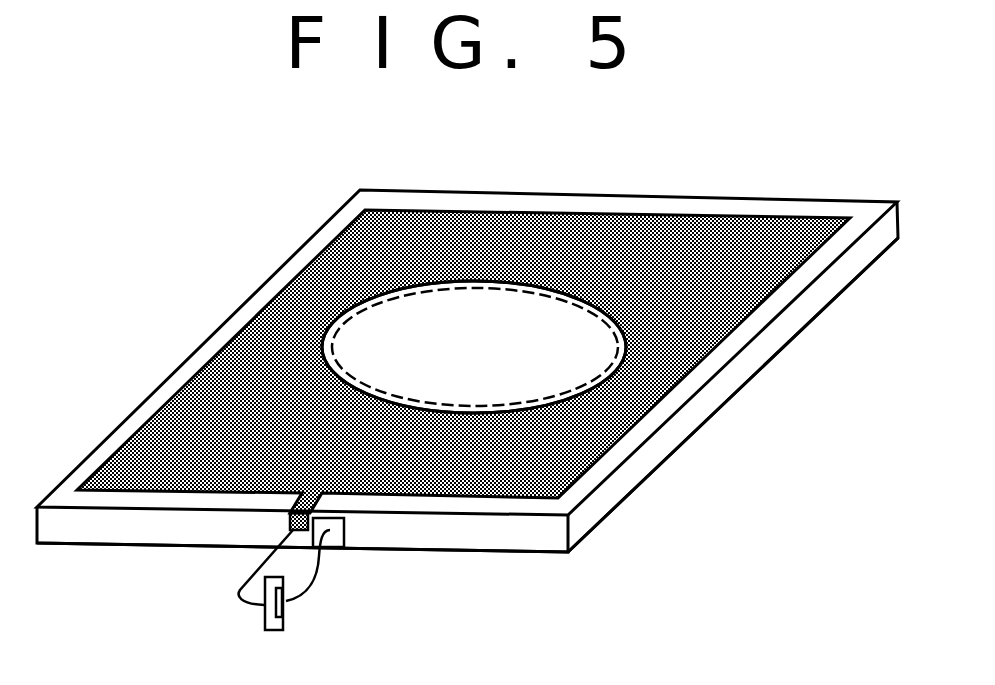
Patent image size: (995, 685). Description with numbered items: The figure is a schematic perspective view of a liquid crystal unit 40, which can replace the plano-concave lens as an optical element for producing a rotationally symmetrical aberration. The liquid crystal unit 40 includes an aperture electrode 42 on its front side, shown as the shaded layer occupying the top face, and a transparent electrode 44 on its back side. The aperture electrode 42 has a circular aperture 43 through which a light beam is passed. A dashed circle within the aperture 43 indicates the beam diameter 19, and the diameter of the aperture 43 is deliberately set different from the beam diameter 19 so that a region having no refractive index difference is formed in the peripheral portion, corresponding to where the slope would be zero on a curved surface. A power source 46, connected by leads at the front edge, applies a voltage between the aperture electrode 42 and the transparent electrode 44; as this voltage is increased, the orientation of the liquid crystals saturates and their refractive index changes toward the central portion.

The liquid crystal unit 40 is at (621, 193).
The aperture electrode 42 is at (410, 248).
The aperture 43 is at (378, 302).
The beam diameter 19 is at (565, 305).
The transparent electrode 44 is at (624, 502).
The power source 46 is at (283, 617).